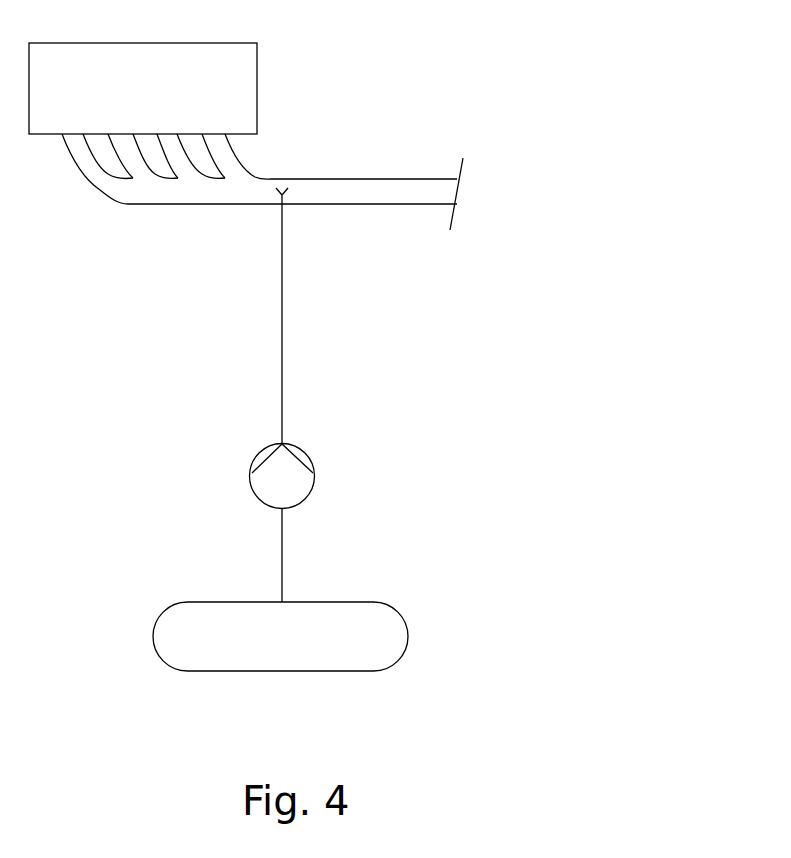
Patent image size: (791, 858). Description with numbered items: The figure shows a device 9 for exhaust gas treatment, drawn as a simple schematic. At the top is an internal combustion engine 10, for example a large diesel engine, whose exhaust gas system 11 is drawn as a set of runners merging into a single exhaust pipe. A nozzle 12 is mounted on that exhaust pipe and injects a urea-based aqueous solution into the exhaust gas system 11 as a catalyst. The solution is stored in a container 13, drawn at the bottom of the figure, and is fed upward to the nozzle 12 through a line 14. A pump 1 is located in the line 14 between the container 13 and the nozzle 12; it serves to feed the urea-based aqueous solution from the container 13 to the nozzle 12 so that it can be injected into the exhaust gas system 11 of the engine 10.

The pump 1 is at (318, 447).
The device for exhaust gas treatment 9 is at (94, 349).
The internal combustion engine 10 is at (152, 102).
The exhaust gas system 11 is at (208, 204).
The nozzle 12 is at (296, 206).
The container 13 is at (289, 649).
The line 14 is at (282, 558).